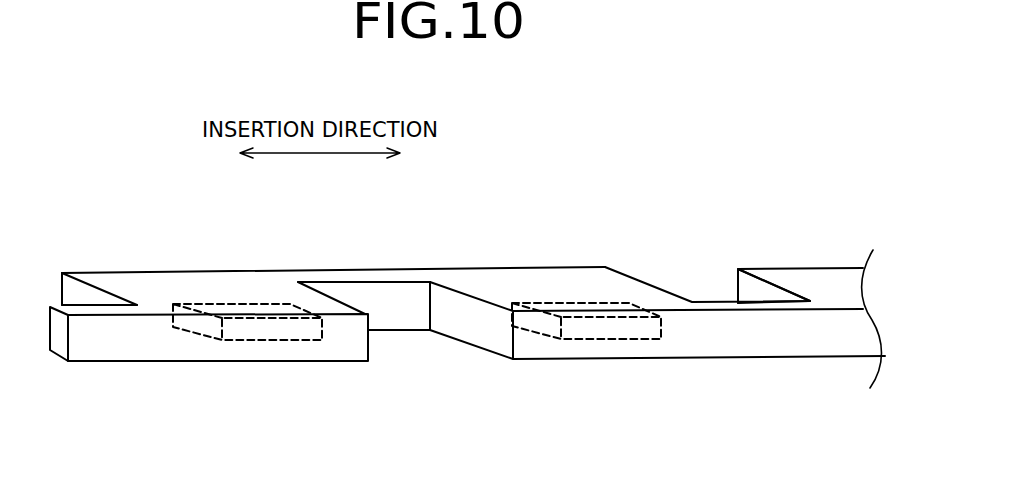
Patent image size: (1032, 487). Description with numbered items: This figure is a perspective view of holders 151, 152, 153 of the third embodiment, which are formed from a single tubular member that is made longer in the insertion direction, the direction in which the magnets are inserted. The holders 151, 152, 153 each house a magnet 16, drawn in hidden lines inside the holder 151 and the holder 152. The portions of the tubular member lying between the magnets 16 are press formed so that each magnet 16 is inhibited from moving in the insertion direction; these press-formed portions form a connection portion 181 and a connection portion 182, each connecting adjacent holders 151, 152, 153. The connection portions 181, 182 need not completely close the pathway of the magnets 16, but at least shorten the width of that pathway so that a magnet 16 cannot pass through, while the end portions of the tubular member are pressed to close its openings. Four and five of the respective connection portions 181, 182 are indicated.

The holder 151 is at (216, 282).
The holder 152 is at (551, 282).
The holder 153 is at (835, 278).
The connection portion 181 is at (347, 271).
The connection portion 182 is at (735, 340).
The magnet 16 is at (272, 335).